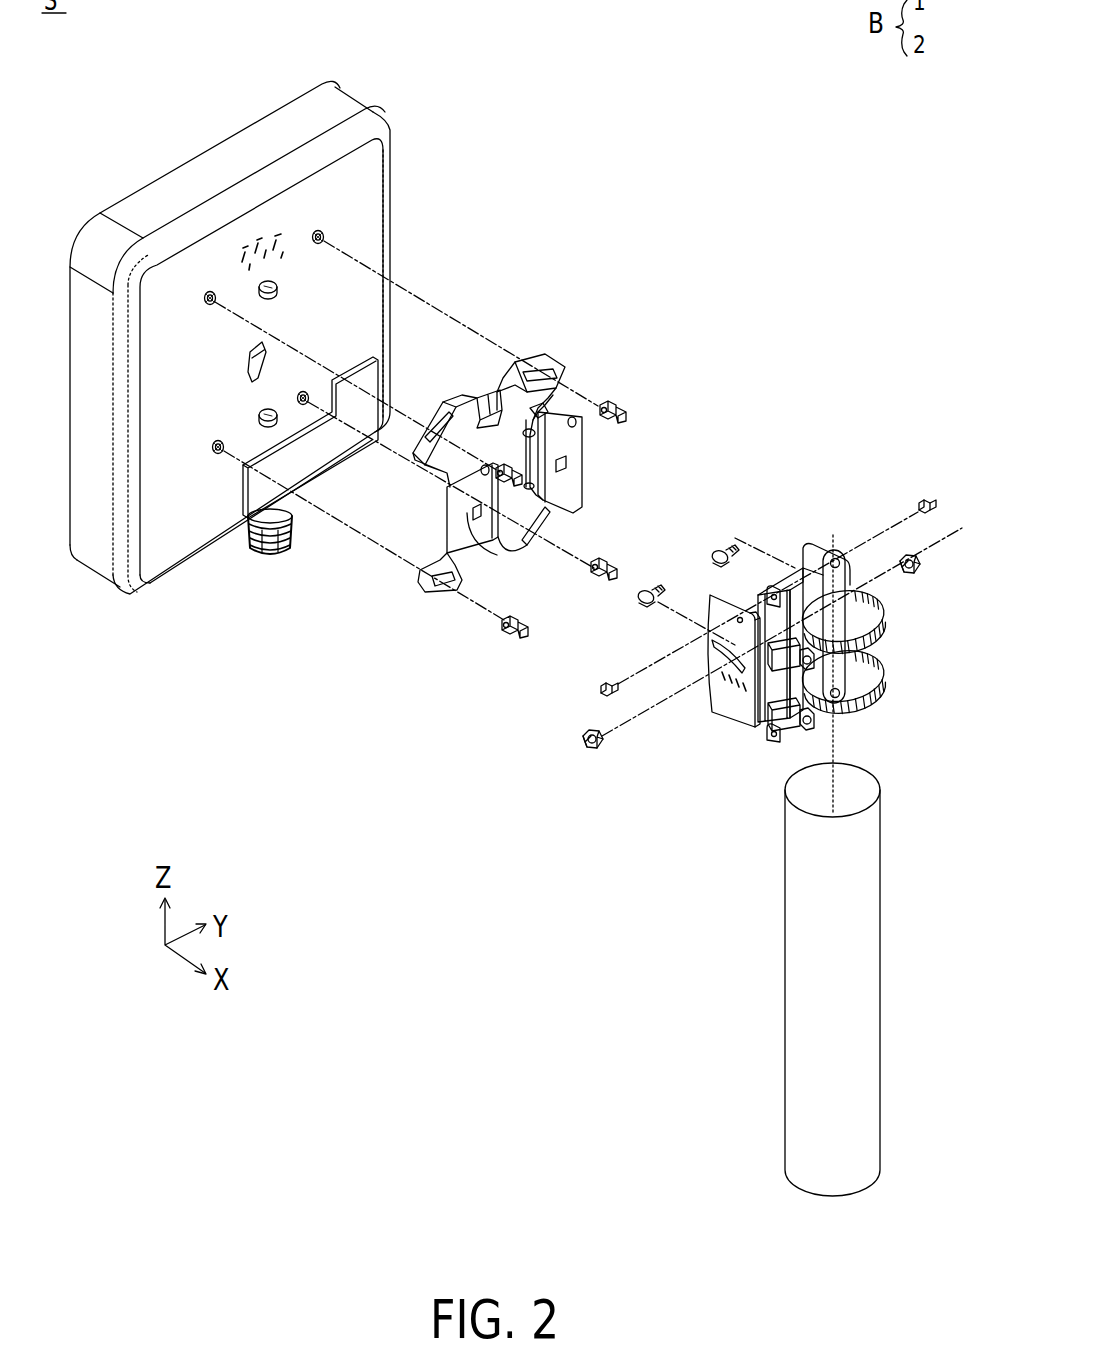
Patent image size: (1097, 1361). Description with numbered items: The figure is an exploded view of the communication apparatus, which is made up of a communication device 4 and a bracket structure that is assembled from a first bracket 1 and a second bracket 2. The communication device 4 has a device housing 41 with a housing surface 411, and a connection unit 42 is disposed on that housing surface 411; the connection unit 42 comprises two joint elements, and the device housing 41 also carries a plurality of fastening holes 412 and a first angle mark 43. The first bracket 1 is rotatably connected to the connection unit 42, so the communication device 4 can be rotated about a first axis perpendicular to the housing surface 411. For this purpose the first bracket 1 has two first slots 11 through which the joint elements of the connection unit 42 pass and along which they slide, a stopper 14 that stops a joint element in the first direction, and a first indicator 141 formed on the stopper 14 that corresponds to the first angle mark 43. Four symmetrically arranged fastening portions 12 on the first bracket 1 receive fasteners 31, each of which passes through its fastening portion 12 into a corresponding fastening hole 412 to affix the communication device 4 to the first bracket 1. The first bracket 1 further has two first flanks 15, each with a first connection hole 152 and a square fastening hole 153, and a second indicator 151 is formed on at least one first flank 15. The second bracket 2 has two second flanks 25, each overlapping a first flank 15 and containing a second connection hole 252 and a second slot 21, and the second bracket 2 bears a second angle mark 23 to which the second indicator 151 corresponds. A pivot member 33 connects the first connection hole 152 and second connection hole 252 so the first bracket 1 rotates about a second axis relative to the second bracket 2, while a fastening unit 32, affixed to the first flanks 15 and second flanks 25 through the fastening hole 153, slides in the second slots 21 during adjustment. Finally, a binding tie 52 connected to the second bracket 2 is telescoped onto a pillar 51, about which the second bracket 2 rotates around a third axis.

The first bracket 1 is at (547, 484).
The second bracket 2 is at (730, 646).
The communication device 4 is at (278, 359).
The first slot 11 is at (560, 428).
The fastening portion 12 is at (540, 352).
The stopper 14 is at (452, 412).
The first indicator 141 is at (487, 398).
The first flank 15 is at (550, 544).
The second indicator 151 is at (535, 540).
The first connection hole 152 is at (626, 420).
The fastening hole 153 is at (584, 470).
The second slot 21 is at (712, 684).
The second angle mark 23 is at (755, 692).
The second flank 25 is at (724, 680).
The second connection hole 252 is at (740, 618).
The fastener 31 is at (491, 653).
The fastening unit 32 is at (912, 580).
The pivot member 33 is at (925, 498).
The device housing 41 is at (92, 575).
The housing surface 411 is at (163, 540).
The fastening hole 412 is at (324, 237).
The connection unit 42 is at (270, 284).
The first angle mark 43 is at (253, 240).
The pillar 51 is at (790, 1012).
The binding tie 52 is at (873, 722).